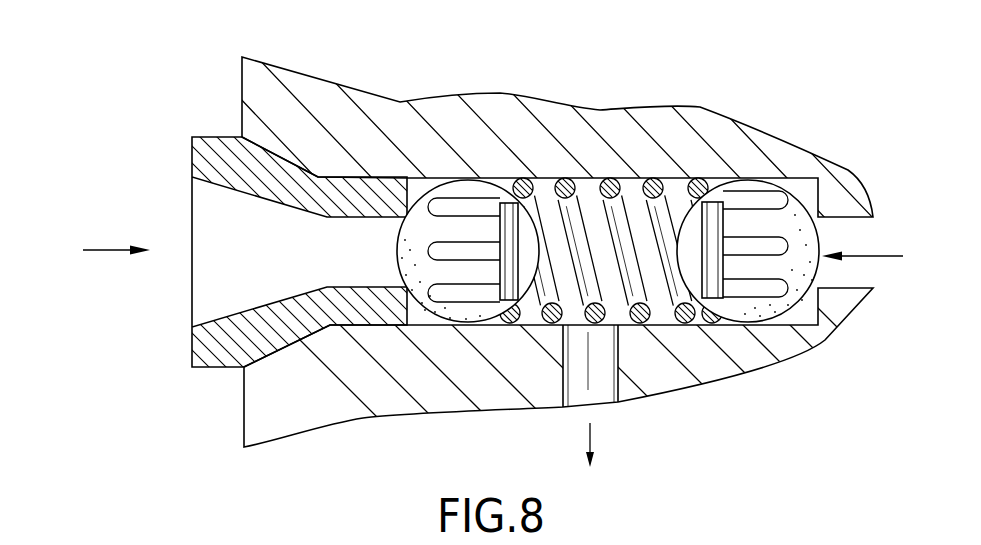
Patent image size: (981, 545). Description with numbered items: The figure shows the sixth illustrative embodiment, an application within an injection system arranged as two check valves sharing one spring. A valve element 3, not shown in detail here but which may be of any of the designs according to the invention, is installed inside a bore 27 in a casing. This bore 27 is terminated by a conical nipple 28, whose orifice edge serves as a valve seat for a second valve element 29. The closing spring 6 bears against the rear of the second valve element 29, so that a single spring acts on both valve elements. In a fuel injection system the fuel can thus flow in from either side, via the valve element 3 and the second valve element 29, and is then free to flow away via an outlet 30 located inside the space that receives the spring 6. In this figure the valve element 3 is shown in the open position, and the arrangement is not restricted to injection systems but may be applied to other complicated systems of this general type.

The valve element 3 is at (757, 228).
The closing spring 6 is at (643, 323).
The bore 27 is at (598, 187).
The conical nipple 28 is at (246, 168).
The second valve element 29 is at (448, 249).
The outlet 30 is at (590, 360).